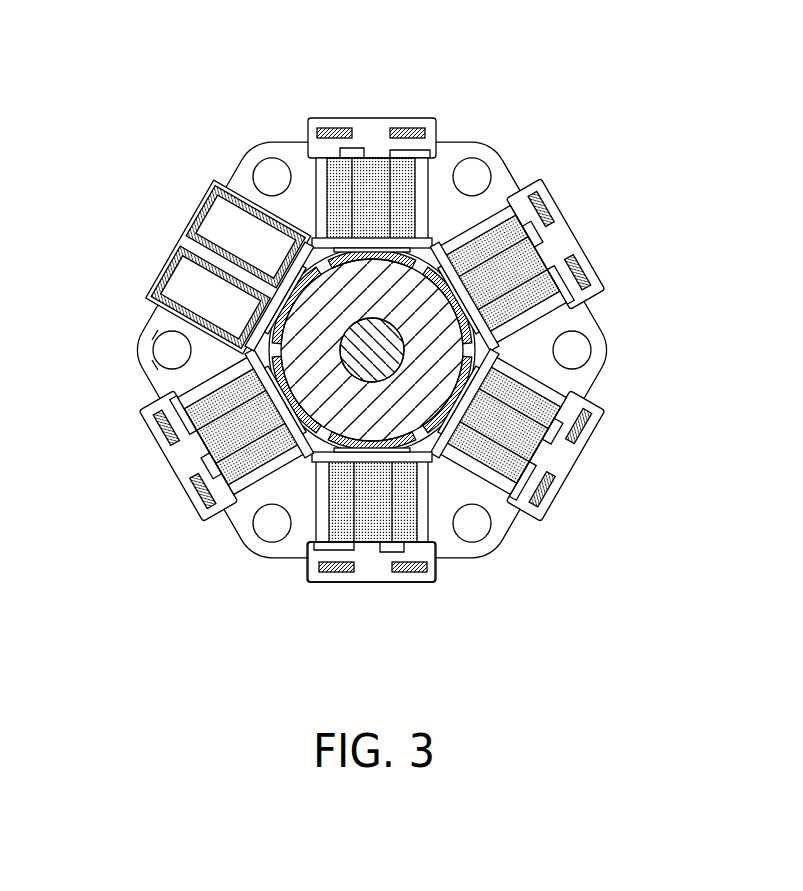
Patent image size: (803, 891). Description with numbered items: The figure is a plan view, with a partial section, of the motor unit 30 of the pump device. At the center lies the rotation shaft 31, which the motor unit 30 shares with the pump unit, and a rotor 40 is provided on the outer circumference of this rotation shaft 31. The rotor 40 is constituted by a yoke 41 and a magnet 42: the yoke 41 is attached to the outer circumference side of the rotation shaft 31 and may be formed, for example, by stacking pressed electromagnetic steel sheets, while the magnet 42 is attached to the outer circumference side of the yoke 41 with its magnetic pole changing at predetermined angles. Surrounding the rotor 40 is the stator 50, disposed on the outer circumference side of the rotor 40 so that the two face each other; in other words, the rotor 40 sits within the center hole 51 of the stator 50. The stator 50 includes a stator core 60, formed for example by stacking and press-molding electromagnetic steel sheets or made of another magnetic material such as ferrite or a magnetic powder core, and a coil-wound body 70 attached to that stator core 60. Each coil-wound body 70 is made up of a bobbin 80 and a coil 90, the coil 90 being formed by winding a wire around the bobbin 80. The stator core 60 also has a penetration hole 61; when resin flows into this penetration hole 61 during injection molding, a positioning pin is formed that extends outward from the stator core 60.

The motor unit 30 is at (268, 124).
The rotation shaft 31 is at (238, 523).
The rotor 40 is at (330, 580).
The yoke 41 is at (425, 250).
The magnet 42 is at (432, 470).
The stator 50 is at (516, 160).
The center hole 51 is at (220, 358).
The stator core 60 is at (262, 545).
The penetration hole 61 is at (578, 352).
The coil-wound body 70 is at (352, 334).
The bobbin 80 is at (362, 126).
The coil 90 is at (200, 298).